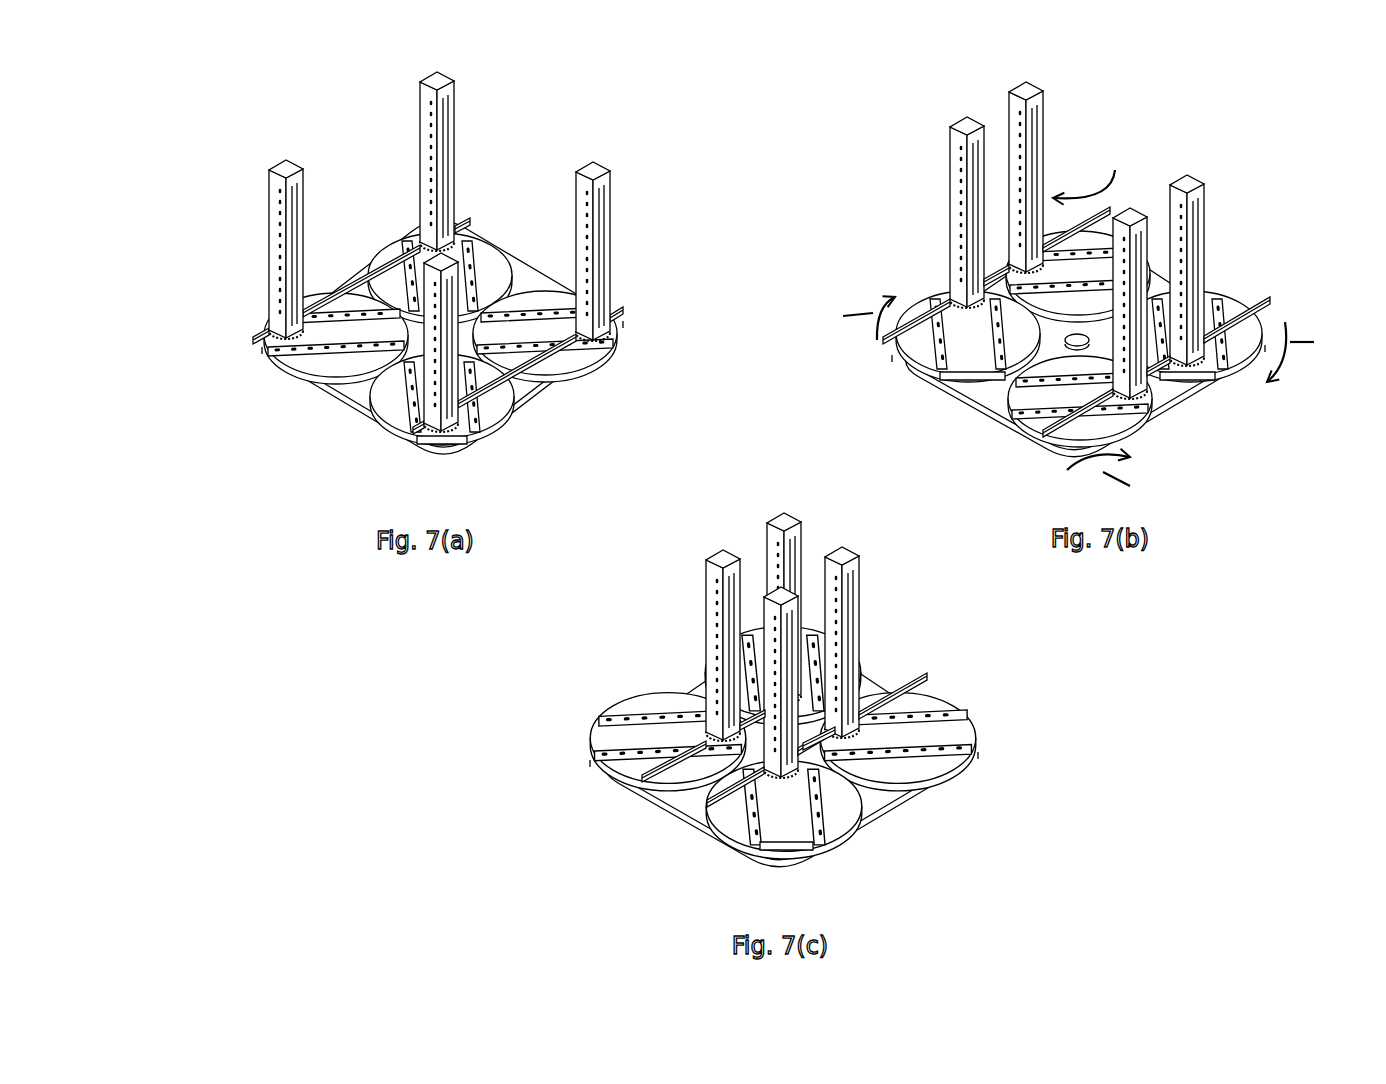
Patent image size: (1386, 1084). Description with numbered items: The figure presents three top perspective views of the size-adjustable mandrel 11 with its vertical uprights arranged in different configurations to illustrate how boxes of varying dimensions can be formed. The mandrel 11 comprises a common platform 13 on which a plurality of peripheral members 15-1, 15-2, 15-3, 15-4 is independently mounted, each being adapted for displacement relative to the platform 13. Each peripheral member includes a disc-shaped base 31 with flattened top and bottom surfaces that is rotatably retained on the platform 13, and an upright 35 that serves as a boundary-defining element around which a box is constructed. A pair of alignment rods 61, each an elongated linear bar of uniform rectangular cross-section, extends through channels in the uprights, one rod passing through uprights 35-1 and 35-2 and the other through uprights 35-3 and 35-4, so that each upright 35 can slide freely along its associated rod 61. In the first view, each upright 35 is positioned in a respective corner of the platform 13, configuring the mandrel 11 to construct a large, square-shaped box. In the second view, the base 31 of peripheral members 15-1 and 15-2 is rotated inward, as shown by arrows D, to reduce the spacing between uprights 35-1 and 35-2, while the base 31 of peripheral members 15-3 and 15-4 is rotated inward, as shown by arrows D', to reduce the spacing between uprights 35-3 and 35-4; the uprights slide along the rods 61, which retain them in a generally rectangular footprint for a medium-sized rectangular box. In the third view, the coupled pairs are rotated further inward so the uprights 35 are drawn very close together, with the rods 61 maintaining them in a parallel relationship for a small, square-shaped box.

In FIG. 7A, the mandrel 11 is at (402, 290).
In FIG. 7B, the mandrel 11 is at (1081, 275).
In FIG. 7C, the mandrel 11 is at (755, 687).
In FIG. 7A, the platform 13 is at (533, 400).
In FIG. 7B, the base 31 is at (912, 362).
In FIG. 7A, the upright 35 is at (580, 205).
In FIG. 7B, the upright 35-1 is at (950, 190).
In FIG. 7C, the upright 35-1 is at (710, 650).
In FIG. 7B, the upright 35-2 is at (1010, 115).
In FIG. 7C, the upright 35-2 is at (782, 520).
In FIG. 7B, the upright 35-3 is at (1205, 250).
In FIG. 7C, the upright 35-3 is at (852, 557).
In FIG. 7B, the upright 35-4 is at (1133, 215).
In FIG. 7C, the upright 35-4 is at (790, 592).
In FIG. 7B, the peripheral member 15-1 is at (1035, 294).
In FIG. 7C, the peripheral member 15-1 is at (657, 670).
In FIG. 7B, the peripheral member 15-2 is at (1028, 181).
In FIG. 7C, the peripheral member 15-2 is at (756, 588).
In FIG. 7B, the peripheral member 15-3 is at (1210, 253).
In FIG. 7C, the peripheral member 15-3 is at (898, 661).
In FIG. 7B, the peripheral member 15-4 is at (1074, 305).
In FIG. 7C, the peripheral member 15-4 is at (755, 690).
In FIG. 7B, the alignment rod 61 is at (930, 308).